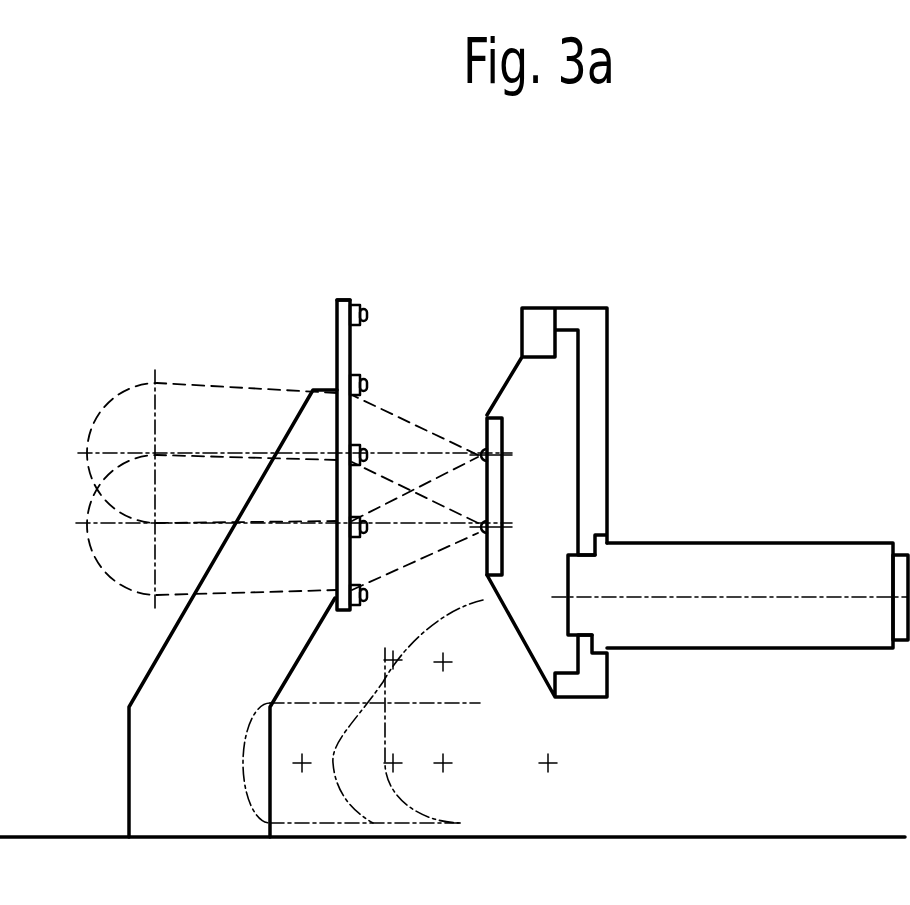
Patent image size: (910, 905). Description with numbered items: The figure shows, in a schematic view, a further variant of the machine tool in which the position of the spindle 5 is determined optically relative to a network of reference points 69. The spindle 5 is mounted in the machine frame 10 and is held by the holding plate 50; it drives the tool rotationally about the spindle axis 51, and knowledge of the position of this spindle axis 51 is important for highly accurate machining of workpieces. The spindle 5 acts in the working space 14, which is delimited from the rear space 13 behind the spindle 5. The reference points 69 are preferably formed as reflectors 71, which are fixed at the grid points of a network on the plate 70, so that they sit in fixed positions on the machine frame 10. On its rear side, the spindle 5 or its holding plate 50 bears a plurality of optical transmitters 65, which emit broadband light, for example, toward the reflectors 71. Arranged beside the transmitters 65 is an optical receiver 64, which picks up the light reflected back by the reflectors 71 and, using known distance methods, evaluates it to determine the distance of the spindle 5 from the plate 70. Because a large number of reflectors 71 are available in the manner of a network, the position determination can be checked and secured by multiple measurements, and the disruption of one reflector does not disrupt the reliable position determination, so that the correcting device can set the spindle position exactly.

The spindle 5 is at (718, 567).
The machine frame 10 is at (167, 743).
The rear space 13 is at (312, 227).
The working space 14 is at (802, 437).
The holding plate 50 is at (553, 385).
The spindle axis 51 is at (862, 597).
The receiver 64 is at (505, 478).
The transmitter 65 is at (481, 449).
The reference points 69 is at (385, 278).
The plate 70 is at (337, 345).
The reflectors 71 is at (363, 388).